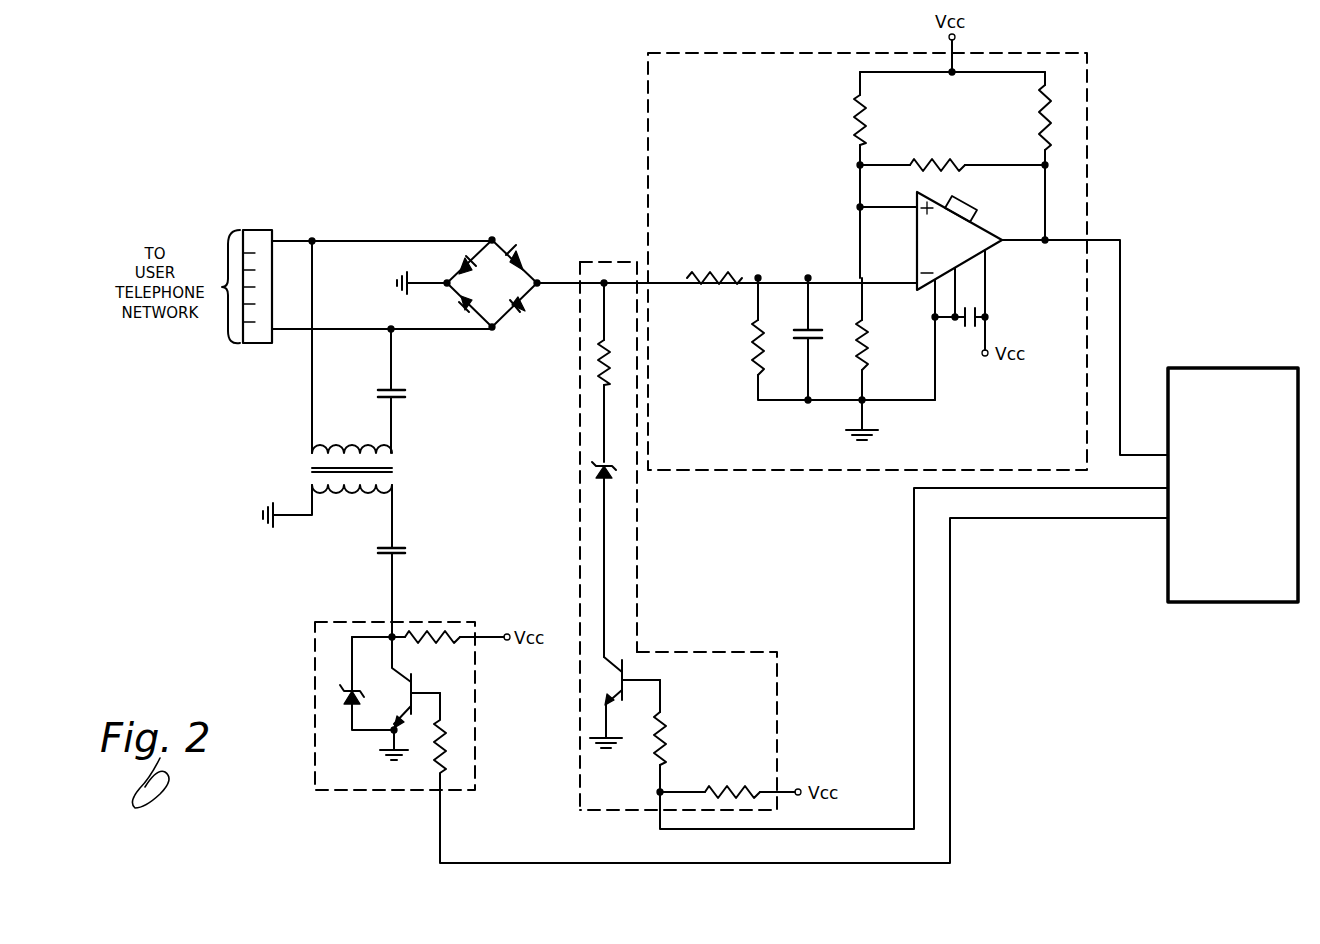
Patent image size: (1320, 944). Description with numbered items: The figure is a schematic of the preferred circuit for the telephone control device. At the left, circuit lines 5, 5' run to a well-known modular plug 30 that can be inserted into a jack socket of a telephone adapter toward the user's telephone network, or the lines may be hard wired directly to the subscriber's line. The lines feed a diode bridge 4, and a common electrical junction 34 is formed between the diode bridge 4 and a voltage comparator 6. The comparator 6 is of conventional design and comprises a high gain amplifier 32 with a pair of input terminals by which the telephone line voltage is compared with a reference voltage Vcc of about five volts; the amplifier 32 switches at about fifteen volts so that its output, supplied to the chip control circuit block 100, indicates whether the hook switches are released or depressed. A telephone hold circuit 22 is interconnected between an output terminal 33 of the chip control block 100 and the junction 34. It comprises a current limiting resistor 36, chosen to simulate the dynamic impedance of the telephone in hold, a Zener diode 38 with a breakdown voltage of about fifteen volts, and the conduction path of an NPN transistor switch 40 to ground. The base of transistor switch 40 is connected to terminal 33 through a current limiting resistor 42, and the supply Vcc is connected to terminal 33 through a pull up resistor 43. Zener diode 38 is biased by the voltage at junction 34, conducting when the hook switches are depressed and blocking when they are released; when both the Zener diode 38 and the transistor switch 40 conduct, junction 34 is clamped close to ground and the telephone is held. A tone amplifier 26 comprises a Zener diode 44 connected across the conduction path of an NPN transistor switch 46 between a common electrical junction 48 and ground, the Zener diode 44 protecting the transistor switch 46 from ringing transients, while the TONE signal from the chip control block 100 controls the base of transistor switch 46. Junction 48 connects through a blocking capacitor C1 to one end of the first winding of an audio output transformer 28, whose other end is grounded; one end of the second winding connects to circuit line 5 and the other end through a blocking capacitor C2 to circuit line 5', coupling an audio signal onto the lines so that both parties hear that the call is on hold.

The modular plug 30 is at (268, 230).
The circuit line 5 is at (382, 231).
The circuit line 5' is at (382, 317).
The diode bridge 4 is at (498, 297).
The blocking capacitor C2 is at (408, 393).
The audio output transformer 28 is at (399, 465).
The blocking capacitor C1 is at (408, 551).
The tone amplifier 26 is at (317, 622).
The common electrical junction 48 is at (397, 636).
The transistor switch 46 is at (416, 689).
The Zener diode 44 is at (338, 700).
The common electrical junction 34 is at (604, 278).
The telephone hold circuit 22 is at (640, 617).
The current limiting resistor 36 is at (597, 368).
The Zener diode 38 is at (590, 472).
The transistor switch 40 is at (616, 675).
The current limiting resistor 42 is at (668, 733).
The pull up resistor 43 is at (726, 790).
The output terminal 33 is at (657, 792).
The voltage comparator 6 is at (1087, 153).
The high gain amplifier 32 is at (968, 235).
The chip control circuit block 100 is at (1215, 536).